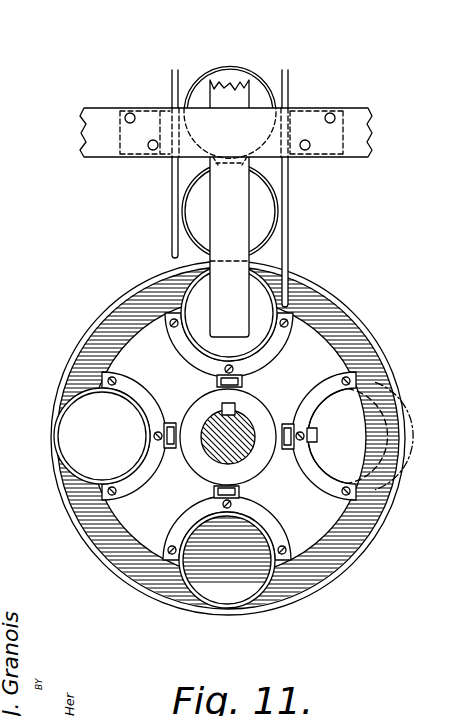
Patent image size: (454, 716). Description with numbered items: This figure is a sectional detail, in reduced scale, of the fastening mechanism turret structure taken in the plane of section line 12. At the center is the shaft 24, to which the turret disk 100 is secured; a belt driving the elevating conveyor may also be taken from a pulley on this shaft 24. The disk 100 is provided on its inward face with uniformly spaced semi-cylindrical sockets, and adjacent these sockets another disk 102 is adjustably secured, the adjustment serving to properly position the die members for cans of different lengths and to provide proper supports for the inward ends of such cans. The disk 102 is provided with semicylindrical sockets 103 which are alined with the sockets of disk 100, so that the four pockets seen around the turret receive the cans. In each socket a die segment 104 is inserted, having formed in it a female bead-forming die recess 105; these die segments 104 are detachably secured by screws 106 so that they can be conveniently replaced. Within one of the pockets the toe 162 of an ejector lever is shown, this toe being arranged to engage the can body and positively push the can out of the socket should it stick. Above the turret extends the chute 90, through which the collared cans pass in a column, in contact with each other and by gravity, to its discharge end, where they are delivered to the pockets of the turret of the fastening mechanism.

The chute 90 is at (152, 108).
The section line 12 is at (230, 98).
The female bead-forming die recess 105 is at (167, 263).
The screws 106 is at (170, 318).
The disk 100 is at (290, 313).
The die segment 104 is at (288, 315).
The disk 102 is at (317, 347).
The toe 162 is at (318, 434).
The shaft 24 is at (243, 450).
The semicylindrical sockets 103 is at (190, 538).